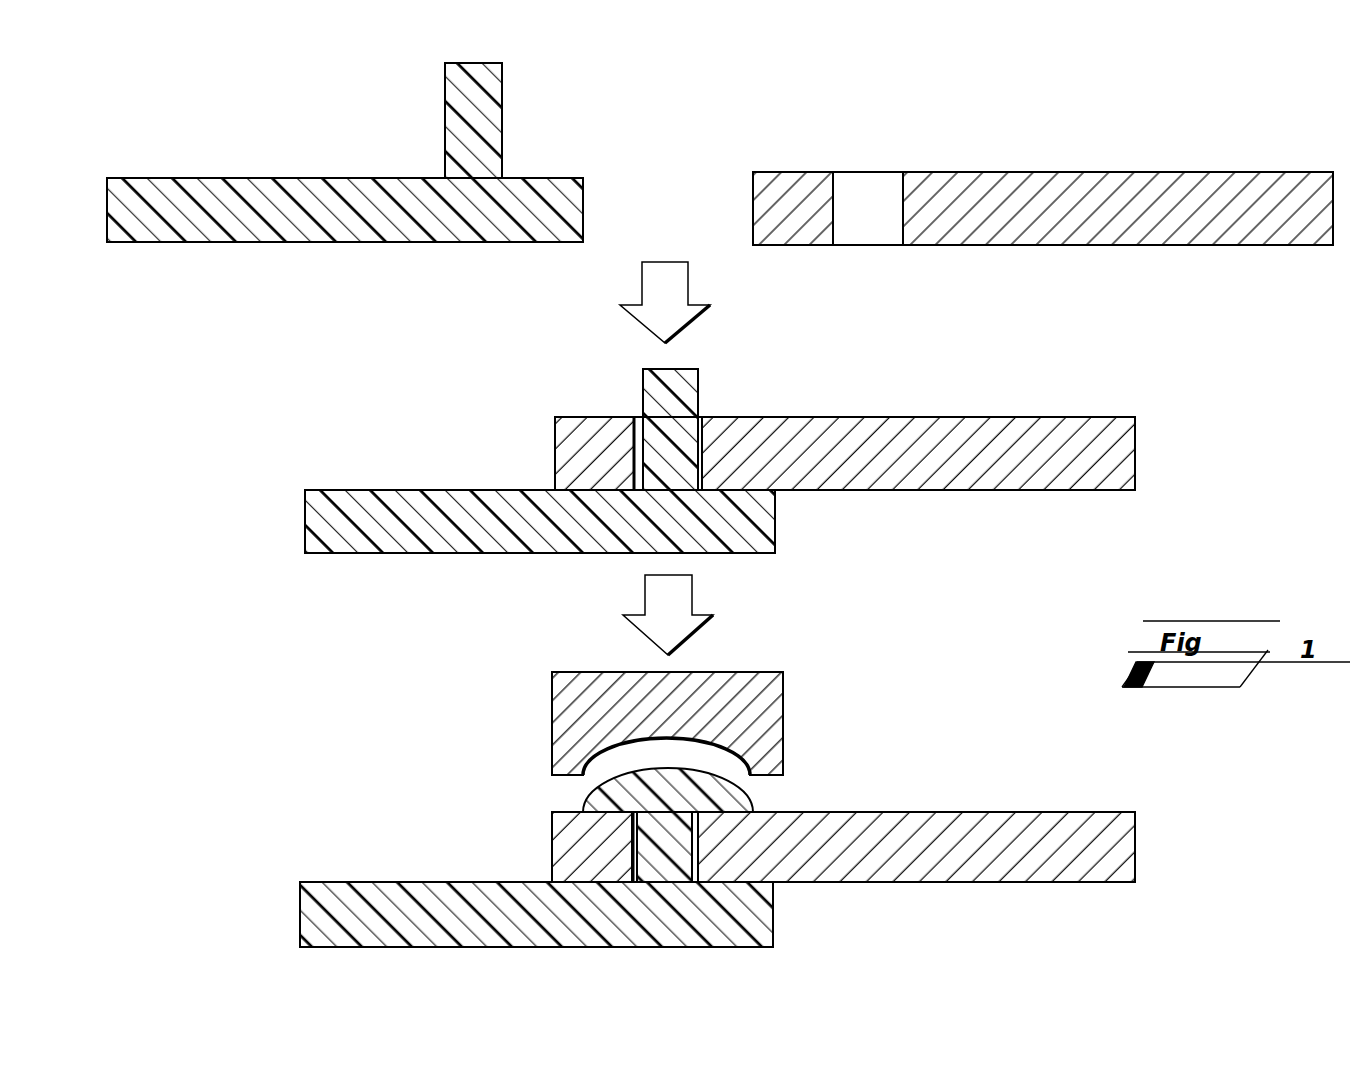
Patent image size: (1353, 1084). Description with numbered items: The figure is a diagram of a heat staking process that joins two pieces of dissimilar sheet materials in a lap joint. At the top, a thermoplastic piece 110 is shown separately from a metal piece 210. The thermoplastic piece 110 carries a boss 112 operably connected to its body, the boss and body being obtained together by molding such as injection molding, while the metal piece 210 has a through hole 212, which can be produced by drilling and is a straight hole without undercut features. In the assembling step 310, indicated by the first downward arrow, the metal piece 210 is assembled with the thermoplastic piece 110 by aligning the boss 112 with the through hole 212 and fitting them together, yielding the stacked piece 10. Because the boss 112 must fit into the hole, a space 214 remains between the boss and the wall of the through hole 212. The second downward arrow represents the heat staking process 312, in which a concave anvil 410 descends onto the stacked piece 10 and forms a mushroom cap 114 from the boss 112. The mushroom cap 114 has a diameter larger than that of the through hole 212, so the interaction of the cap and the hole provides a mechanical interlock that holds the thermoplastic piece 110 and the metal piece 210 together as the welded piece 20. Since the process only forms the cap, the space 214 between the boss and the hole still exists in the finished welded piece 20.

The stacked piece 10 is at (347, 385).
The welded piece 20 is at (342, 690).
The thermoplastic piece 110 is at (338, 242).
The boss 112 is at (503, 113).
The mushroom cap 114 is at (750, 792).
The metal piece 210 is at (1062, 172).
The through hole 212 is at (865, 235).
The space 214 is at (633, 436).
The assembling step 310 is at (697, 267).
The heat staking process 312 is at (643, 590).
The concave anvil 410 is at (763, 672).